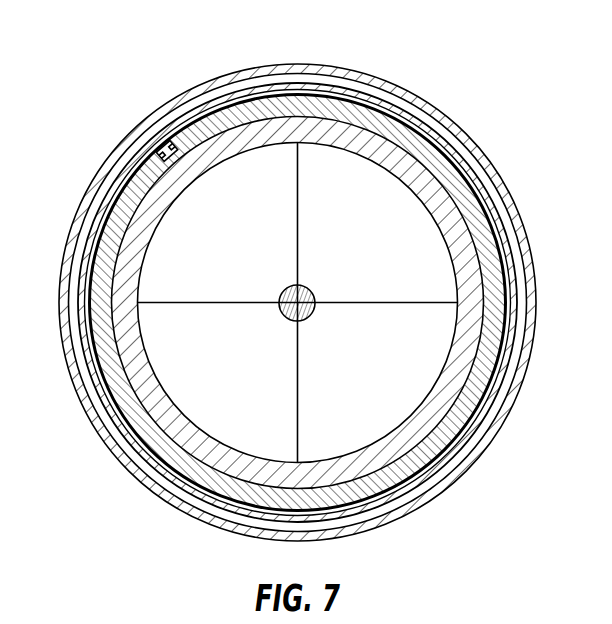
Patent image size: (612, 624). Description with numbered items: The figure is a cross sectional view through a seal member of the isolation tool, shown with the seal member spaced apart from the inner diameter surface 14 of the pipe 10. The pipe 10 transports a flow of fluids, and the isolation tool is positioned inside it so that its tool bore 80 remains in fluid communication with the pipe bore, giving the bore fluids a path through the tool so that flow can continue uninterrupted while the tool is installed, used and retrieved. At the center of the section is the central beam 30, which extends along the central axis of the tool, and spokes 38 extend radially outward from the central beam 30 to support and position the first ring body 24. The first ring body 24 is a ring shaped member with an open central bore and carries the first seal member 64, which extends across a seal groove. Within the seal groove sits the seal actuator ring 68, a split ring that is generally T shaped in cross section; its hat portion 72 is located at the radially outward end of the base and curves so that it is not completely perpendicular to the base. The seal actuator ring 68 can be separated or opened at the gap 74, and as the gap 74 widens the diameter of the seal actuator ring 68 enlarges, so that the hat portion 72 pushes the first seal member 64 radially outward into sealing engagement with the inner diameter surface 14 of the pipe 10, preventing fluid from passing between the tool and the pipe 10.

The pipe 10 is at (518, 214).
The inner diameter surface 14 is at (285, 70).
The first ring body 24 is at (477, 340).
The central beam 30 is at (288, 322).
The spokes 38 is at (233, 302).
The first seal member 64 is at (455, 152).
The seal actuator ring 68 is at (110, 220).
The hat portion 72 is at (190, 121).
The gap 74 is at (152, 146).
The tool bore 80 is at (383, 367).